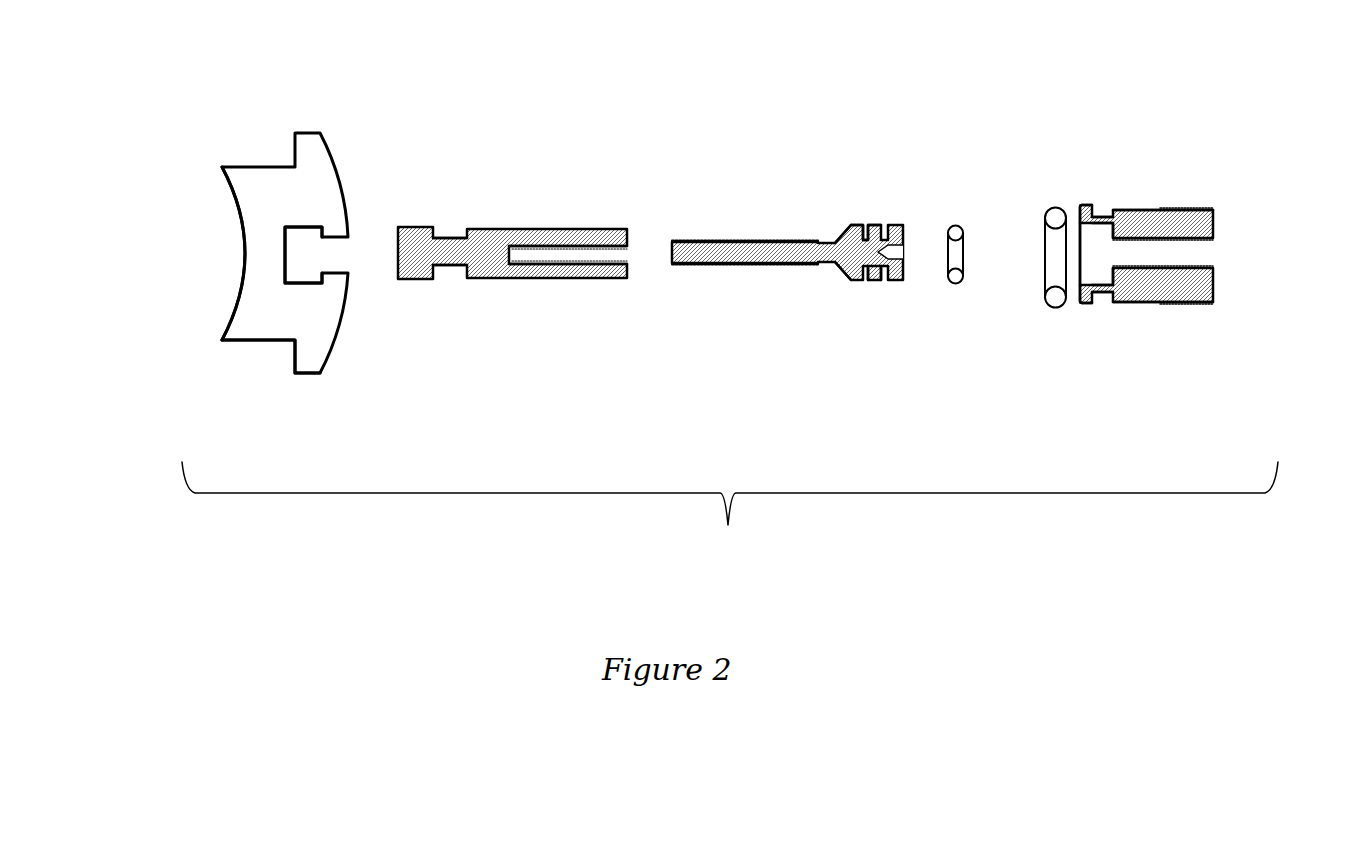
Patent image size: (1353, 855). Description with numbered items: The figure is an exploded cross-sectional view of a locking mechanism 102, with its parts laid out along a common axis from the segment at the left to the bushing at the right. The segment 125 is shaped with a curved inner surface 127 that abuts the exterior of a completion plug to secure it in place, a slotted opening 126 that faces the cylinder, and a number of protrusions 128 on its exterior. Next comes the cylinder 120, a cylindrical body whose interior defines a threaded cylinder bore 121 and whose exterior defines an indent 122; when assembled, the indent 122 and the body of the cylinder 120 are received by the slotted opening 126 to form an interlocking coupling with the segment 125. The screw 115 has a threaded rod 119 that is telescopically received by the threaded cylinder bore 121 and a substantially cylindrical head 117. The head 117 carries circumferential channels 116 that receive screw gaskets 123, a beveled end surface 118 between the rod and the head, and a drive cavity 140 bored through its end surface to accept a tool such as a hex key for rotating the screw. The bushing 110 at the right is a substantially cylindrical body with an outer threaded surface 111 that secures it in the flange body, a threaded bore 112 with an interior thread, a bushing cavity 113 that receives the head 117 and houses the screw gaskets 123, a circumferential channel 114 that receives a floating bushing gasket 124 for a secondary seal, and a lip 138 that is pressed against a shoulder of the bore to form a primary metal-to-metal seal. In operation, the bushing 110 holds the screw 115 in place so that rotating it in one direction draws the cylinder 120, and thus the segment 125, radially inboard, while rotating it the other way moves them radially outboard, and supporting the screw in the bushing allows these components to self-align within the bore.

The locking mechanism 102 is at (730, 523).
The bushing 110 is at (1165, 209).
The outer threaded surface 111 is at (1210, 203).
The threaded bore 112 is at (1213, 267).
The bushing cavity 113 is at (1103, 246).
The channel 114 is at (1103, 293).
The screw 115 is at (821, 221).
The circumferential channels 116 is at (857, 225).
The head 117 is at (878, 298).
The beveled end surface 118 is at (847, 278).
The threaded rod 119 is at (755, 265).
The cylinder 120 is at (557, 154).
The threaded cylinder bore 121 is at (600, 262).
The indent 122 is at (445, 238).
The screw gaskets 123 is at (959, 226).
The bushing gasket 124 is at (1056, 207).
The segment 125 is at (317, 116).
The slotted opening 126 is at (331, 262).
The curved inner surface 127 is at (237, 203).
The protrusions 128 is at (273, 345).
The lip 138 is at (1083, 303).
The drive cavity 140 is at (889, 262).